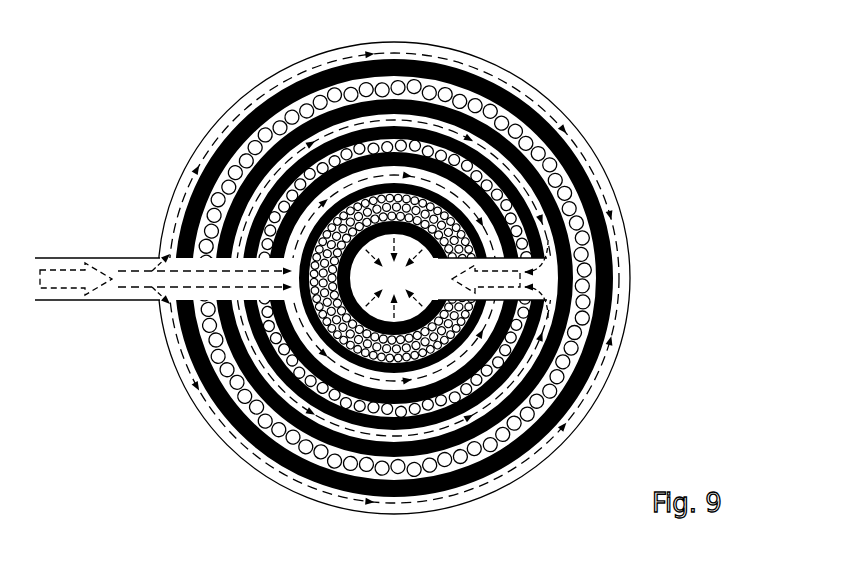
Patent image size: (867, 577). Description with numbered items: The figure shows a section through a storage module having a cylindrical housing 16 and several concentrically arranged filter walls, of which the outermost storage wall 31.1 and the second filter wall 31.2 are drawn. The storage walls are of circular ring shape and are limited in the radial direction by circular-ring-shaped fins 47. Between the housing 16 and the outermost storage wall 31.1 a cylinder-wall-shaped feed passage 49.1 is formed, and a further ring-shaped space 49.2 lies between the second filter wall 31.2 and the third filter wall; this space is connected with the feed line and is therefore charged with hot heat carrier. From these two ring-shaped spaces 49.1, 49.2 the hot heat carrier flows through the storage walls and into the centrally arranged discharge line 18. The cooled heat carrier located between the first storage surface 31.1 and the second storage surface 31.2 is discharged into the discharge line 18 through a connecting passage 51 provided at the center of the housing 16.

The housing 16 is at (602, 173).
The discharge line 18 is at (402, 287).
The outermost storage wall 31.1 is at (600, 338).
The second filter wall 31.2 is at (568, 400).
The fins 47 is at (258, 408).
The feed passage 49.1 is at (615, 278).
The ring-shaped space 49.2 is at (493, 467).
The connecting passage 51 is at (548, 268).